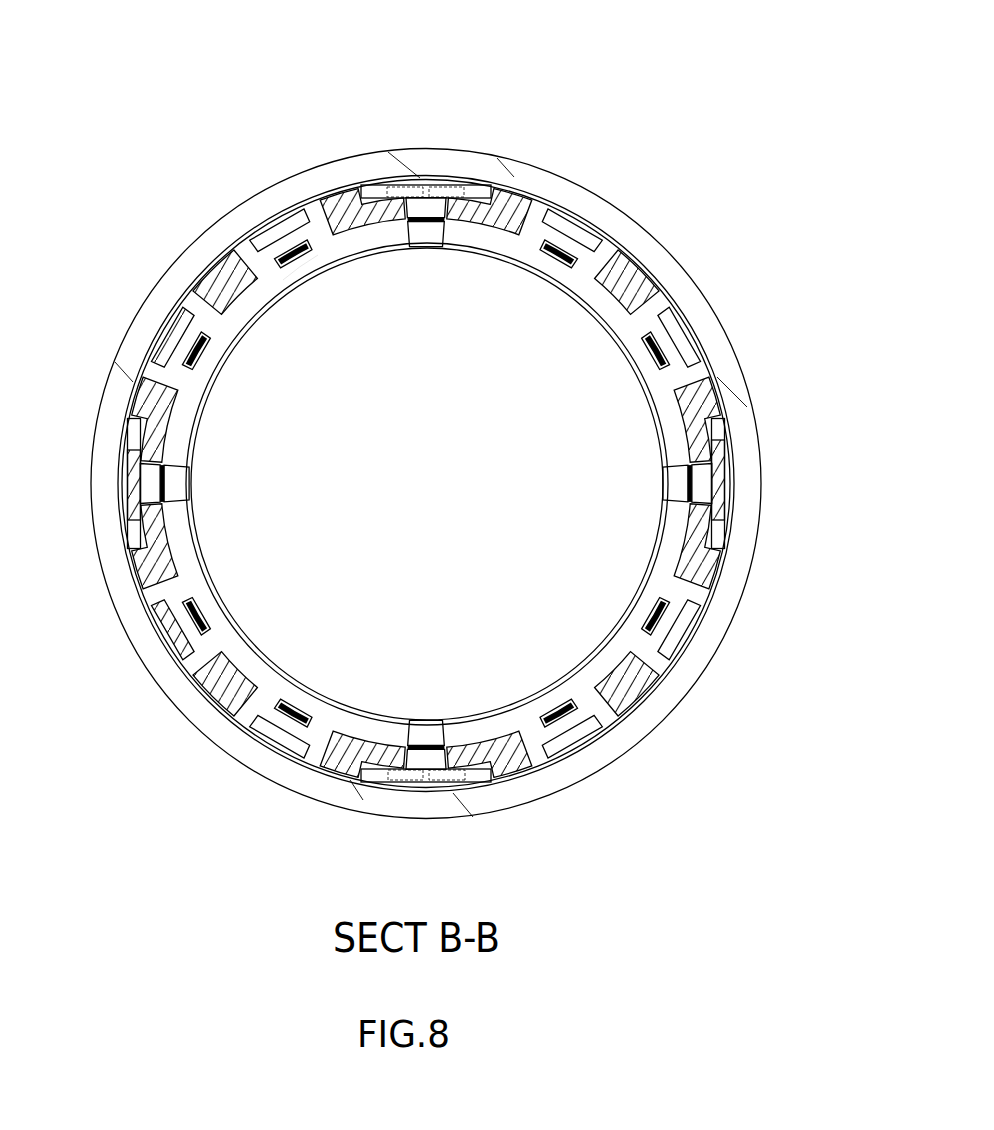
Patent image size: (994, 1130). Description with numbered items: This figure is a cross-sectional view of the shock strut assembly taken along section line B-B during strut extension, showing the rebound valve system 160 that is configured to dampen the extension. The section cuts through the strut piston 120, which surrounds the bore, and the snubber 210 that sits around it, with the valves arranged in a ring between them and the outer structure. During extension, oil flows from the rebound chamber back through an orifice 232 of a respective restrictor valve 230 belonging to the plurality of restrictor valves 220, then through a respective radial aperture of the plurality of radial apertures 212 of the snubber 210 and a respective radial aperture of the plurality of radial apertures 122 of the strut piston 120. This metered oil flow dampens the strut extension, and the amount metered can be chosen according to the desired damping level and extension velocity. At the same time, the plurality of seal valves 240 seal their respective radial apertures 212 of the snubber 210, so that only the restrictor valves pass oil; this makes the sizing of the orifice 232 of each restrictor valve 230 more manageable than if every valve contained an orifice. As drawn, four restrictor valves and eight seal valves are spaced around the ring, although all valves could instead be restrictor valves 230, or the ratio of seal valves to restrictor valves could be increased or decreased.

The rebound valve system 160 is at (200, 62).
The strut piston 120 is at (260, 310).
The plurality of radial apertures 122 is at (300, 267).
The snubber 210 is at (232, 292).
The plurality of radial apertures 212 is at (297, 745).
The plurality of restrictor valves 220 is at (445, 210).
The restrictor valve 230 is at (135, 455).
The orifice 232 is at (132, 496).
The plurality of seal valves 240 is at (290, 232).